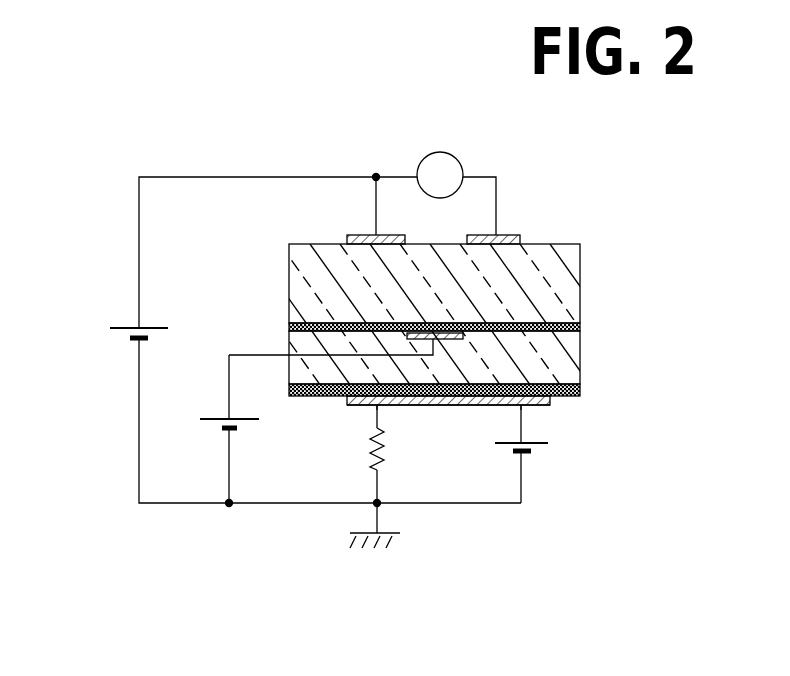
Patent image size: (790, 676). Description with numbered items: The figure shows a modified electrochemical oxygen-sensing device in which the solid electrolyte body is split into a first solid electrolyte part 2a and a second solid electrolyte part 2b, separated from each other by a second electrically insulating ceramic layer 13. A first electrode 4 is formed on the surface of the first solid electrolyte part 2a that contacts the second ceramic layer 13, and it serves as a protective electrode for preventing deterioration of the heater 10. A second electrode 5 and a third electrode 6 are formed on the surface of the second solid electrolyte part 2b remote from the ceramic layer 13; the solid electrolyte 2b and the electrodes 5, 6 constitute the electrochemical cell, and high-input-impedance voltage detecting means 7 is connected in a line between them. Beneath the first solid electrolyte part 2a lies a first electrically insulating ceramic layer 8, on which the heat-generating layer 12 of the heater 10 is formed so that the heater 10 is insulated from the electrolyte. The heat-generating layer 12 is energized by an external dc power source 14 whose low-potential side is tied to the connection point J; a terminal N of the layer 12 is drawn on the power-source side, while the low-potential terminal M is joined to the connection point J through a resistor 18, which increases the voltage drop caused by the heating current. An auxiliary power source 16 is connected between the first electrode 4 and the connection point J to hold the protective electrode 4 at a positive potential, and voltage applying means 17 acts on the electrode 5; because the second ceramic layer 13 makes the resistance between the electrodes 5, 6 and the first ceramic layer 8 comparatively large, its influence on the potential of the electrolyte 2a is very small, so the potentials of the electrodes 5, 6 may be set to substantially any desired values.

The first solid electrolyte part 2a is at (568, 345).
The second solid electrolyte part 2b is at (565, 263).
The first electrode 4 is at (453, 341).
The second electrode 5 is at (352, 236).
The third electrode 6 is at (508, 235).
The voltage detecting means 7 is at (455, 167).
The first electrically insulating ceramic layer 8 is at (580, 393).
The heater 10 is at (552, 413).
The heat-generating layer 12 is at (445, 405).
The second electrically insulating ceramic layer 13 is at (560, 327).
The dc power source 14 is at (547, 467).
The auxiliary power source 16 is at (212, 439).
The voltage applying means 17 is at (125, 355).
The resistor 18 is at (358, 448).
The low-potential terminal M is at (373, 410).
The terminal N is at (520, 410).
The connection point J is at (382, 506).